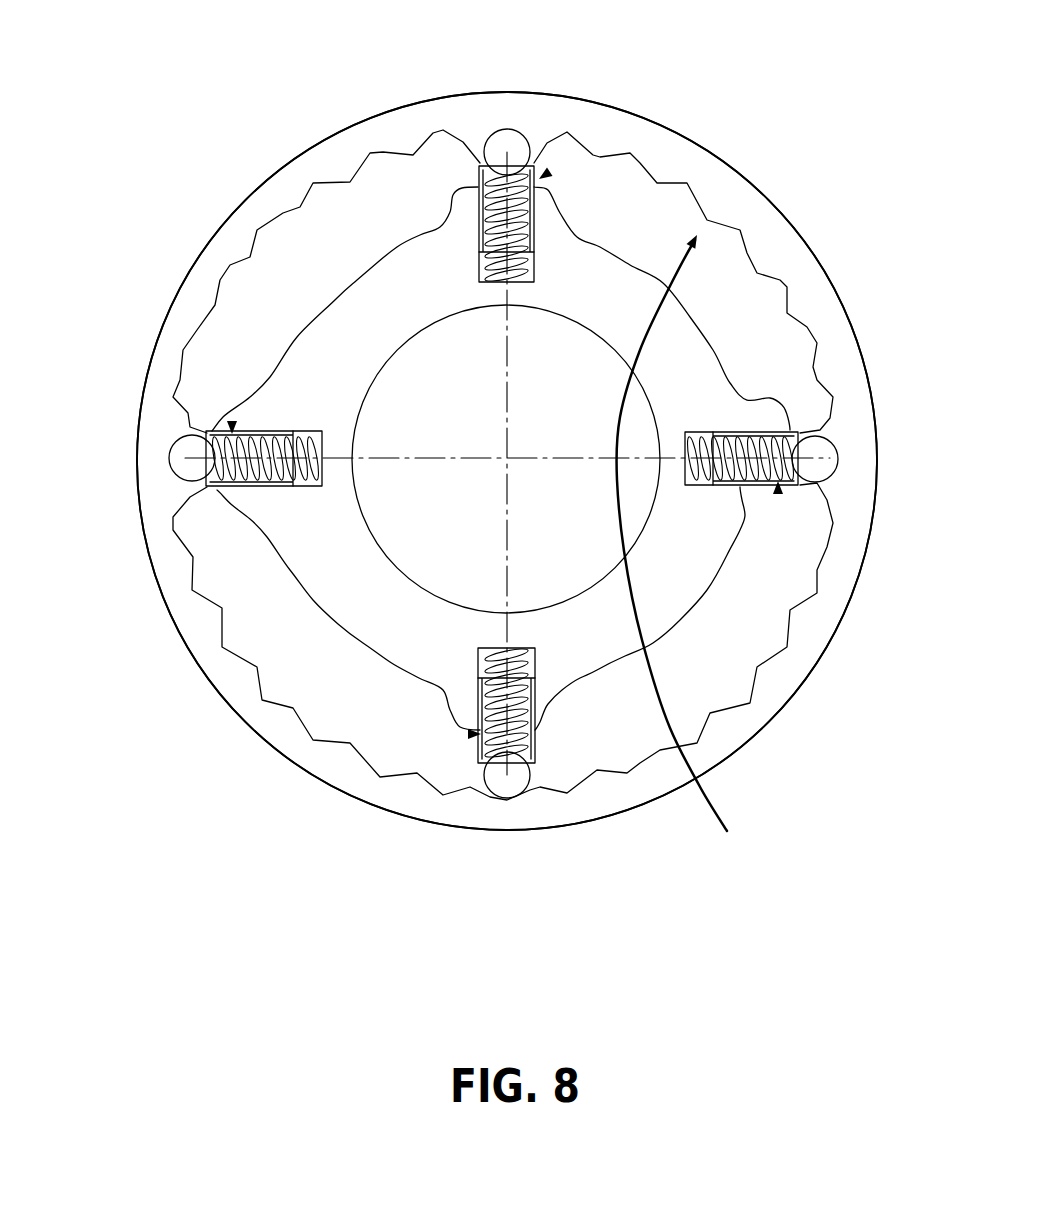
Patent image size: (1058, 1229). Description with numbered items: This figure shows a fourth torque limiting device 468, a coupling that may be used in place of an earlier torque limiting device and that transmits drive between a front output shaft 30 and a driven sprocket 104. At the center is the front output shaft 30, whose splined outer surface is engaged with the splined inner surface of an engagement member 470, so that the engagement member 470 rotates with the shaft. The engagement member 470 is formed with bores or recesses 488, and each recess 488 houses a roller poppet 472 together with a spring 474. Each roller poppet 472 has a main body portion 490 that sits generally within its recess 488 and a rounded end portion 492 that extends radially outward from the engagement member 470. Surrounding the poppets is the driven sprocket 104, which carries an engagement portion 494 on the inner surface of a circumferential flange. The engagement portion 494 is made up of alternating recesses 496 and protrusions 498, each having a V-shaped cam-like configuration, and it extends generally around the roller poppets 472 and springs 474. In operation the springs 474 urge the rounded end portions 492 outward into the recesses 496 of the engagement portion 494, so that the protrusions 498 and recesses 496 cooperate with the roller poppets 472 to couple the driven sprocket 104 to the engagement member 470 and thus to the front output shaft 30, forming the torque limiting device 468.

The front output shaft 30 is at (434, 547).
The driven sprocket 104 is at (780, 677).
The fourth torque limiting device 468 is at (757, 169).
The engagement member 470 is at (690, 350).
The roller poppet 472 is at (545, 173).
The spring 474 is at (485, 167).
The recess 488 is at (480, 267).
The main body portion 490 is at (530, 213).
The rounded end portion 492 is at (507, 140).
The engagement portion 494 is at (693, 543).
The recess 496 is at (320, 187).
The protrusion 498 is at (292, 218).